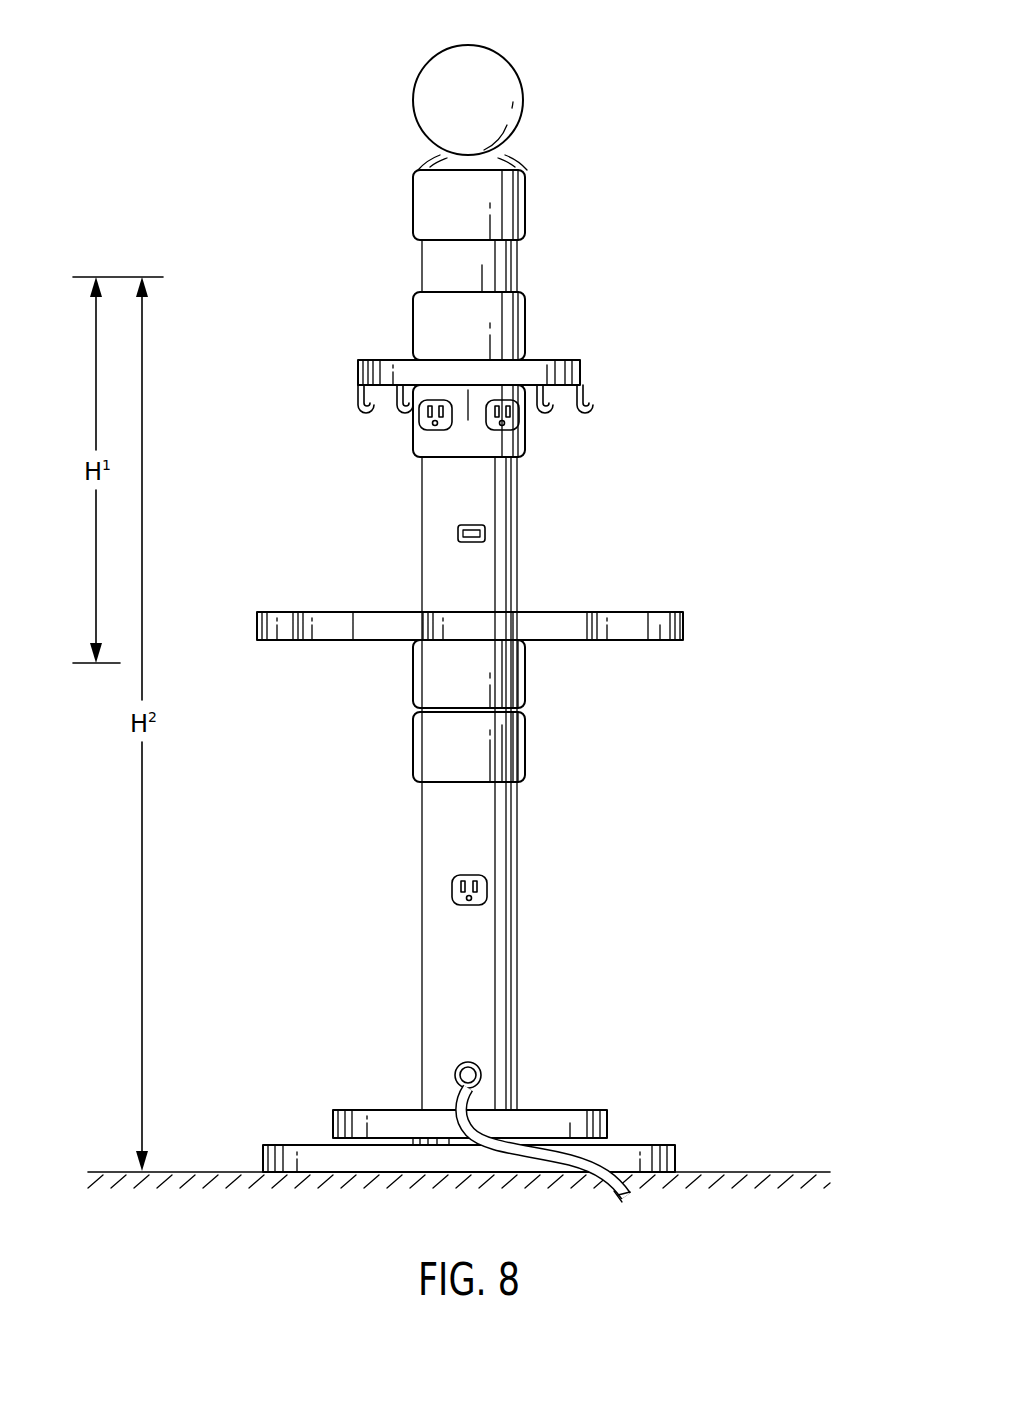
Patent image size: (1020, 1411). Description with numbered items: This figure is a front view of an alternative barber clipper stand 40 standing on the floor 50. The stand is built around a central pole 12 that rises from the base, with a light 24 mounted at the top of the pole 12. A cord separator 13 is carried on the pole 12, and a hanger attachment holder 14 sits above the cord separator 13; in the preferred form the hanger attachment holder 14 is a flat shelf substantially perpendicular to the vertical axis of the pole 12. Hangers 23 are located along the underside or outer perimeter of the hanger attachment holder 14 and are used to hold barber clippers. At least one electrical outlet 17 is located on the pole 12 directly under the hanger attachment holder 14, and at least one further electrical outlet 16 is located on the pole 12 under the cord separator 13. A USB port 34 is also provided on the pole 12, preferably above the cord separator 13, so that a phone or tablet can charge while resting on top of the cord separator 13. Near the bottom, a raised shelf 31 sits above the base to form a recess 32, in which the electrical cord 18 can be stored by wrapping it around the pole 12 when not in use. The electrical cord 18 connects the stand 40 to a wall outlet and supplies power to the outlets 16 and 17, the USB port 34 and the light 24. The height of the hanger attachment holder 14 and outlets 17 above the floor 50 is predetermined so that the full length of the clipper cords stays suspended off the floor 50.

The barber clipper stand 40 is at (298, 172).
The light 24 is at (500, 97).
The hanger attachment holder 14 is at (386, 360).
The hanger 23 is at (580, 415).
The electrical outlet 17 is at (418, 420).
The USB port 34 is at (486, 535).
The cord separator 13 is at (683, 622).
The pole 12 is at (518, 967).
The electrical outlet 16 is at (455, 892).
The raised shelf 31 is at (607, 1118).
The recess 32 is at (318, 1136).
The electrical cord 18 is at (530, 1145).
The floor 50 is at (808, 1171).